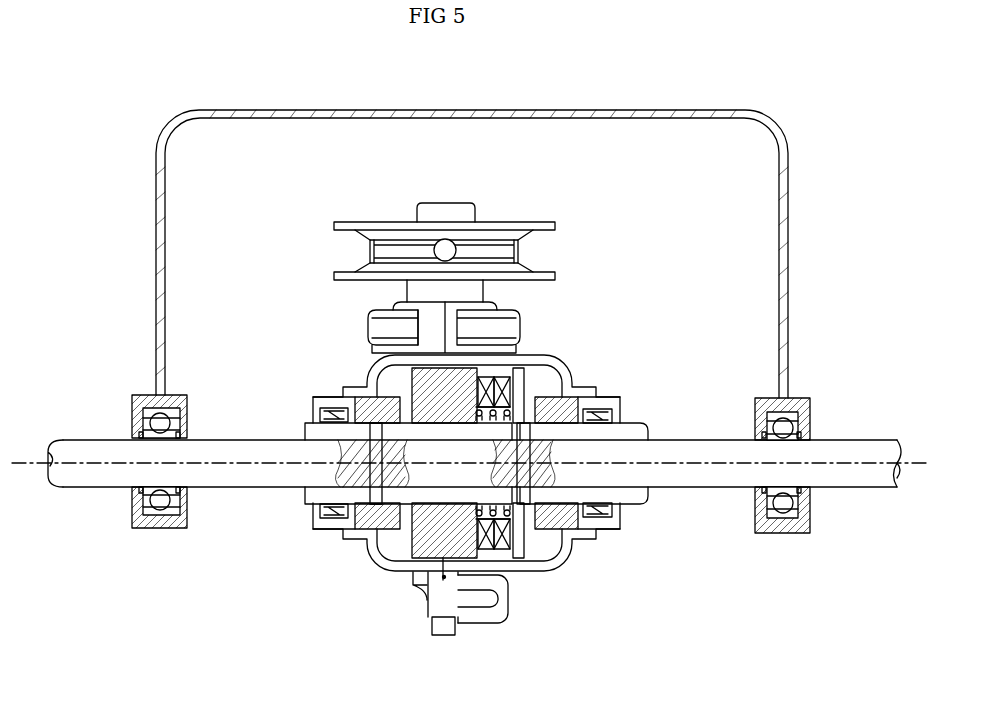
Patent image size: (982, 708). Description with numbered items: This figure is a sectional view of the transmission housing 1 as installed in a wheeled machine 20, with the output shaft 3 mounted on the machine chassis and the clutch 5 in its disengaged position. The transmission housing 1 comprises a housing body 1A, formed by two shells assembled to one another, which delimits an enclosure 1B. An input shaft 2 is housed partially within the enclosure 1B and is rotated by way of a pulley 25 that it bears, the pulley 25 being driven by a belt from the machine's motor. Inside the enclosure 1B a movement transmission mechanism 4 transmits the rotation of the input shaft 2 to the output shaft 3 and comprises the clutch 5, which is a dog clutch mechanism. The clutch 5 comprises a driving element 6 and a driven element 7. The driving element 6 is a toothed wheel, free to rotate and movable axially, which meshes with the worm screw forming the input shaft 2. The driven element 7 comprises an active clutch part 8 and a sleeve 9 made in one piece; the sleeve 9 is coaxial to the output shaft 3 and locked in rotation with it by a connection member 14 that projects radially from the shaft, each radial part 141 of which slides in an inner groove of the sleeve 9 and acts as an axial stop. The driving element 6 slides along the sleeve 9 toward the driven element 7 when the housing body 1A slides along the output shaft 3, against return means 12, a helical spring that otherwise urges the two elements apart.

The transmission housing 1 is at (486, 492).
The housing body 1A is at (565, 560).
The enclosure 1B is at (550, 540).
The input shaft 2 is at (462, 200).
The output shaft 3 is at (270, 478).
The movement transmission mechanism 4 is at (499, 366).
The clutch 5 is at (493, 562).
The driving element 6 is at (432, 533).
The driven element 7 is at (517, 537).
The active clutch part 8 is at (502, 550).
The sleeve 9 is at (452, 520).
The return means 12 is at (497, 408).
The connection member 14 is at (377, 452).
The radial part of the connection member 141 is at (373, 482).
The wheeled machine 20 is at (428, 245).
The pulley 25 is at (353, 217).